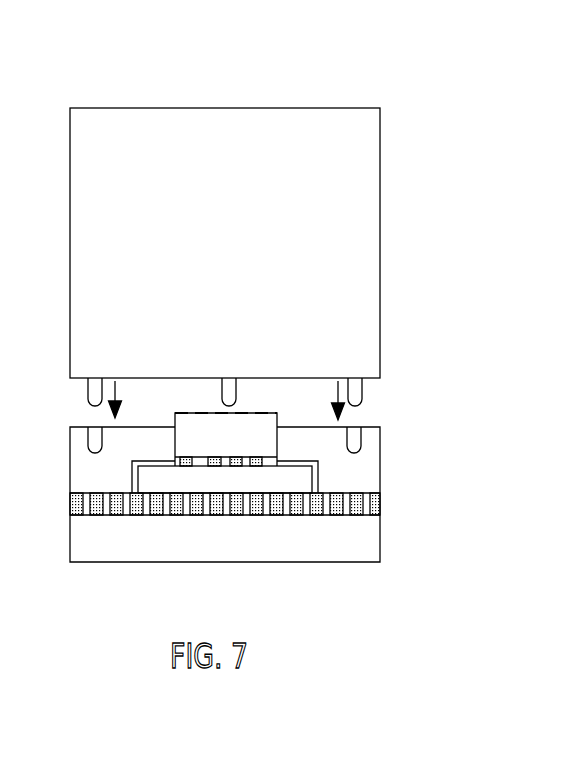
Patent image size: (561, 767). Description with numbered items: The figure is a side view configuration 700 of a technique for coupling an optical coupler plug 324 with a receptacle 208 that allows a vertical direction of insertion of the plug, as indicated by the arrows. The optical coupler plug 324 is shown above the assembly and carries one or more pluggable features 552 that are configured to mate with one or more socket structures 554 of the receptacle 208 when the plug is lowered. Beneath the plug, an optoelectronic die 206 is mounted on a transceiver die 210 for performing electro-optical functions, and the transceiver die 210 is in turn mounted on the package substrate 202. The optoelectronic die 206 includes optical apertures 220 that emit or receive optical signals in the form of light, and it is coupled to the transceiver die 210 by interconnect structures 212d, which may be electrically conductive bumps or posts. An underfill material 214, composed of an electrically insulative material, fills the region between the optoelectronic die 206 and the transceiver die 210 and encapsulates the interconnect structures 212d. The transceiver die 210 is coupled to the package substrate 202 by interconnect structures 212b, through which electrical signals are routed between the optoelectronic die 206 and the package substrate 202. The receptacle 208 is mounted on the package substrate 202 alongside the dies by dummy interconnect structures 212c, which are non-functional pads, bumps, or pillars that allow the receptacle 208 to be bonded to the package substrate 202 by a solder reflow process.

The side view configuration 700 is at (337, 72).
The optical coupler plug 324 is at (200, 302).
The pluggable features 552 is at (362, 393).
The socket structures 554 is at (354, 450).
The optical apertures 220 is at (194, 413).
The optoelectronic die 206 is at (194, 447).
The interconnect structures 212d is at (272, 462).
The transceiver die 210 is at (206, 488).
The receptacle 208 is at (83, 483).
The underfill material 214 is at (204, 509).
The interconnect structures 212b is at (312, 518).
The dummy interconnect structures 212c is at (135, 518).
The package substrate 202 is at (170, 562).